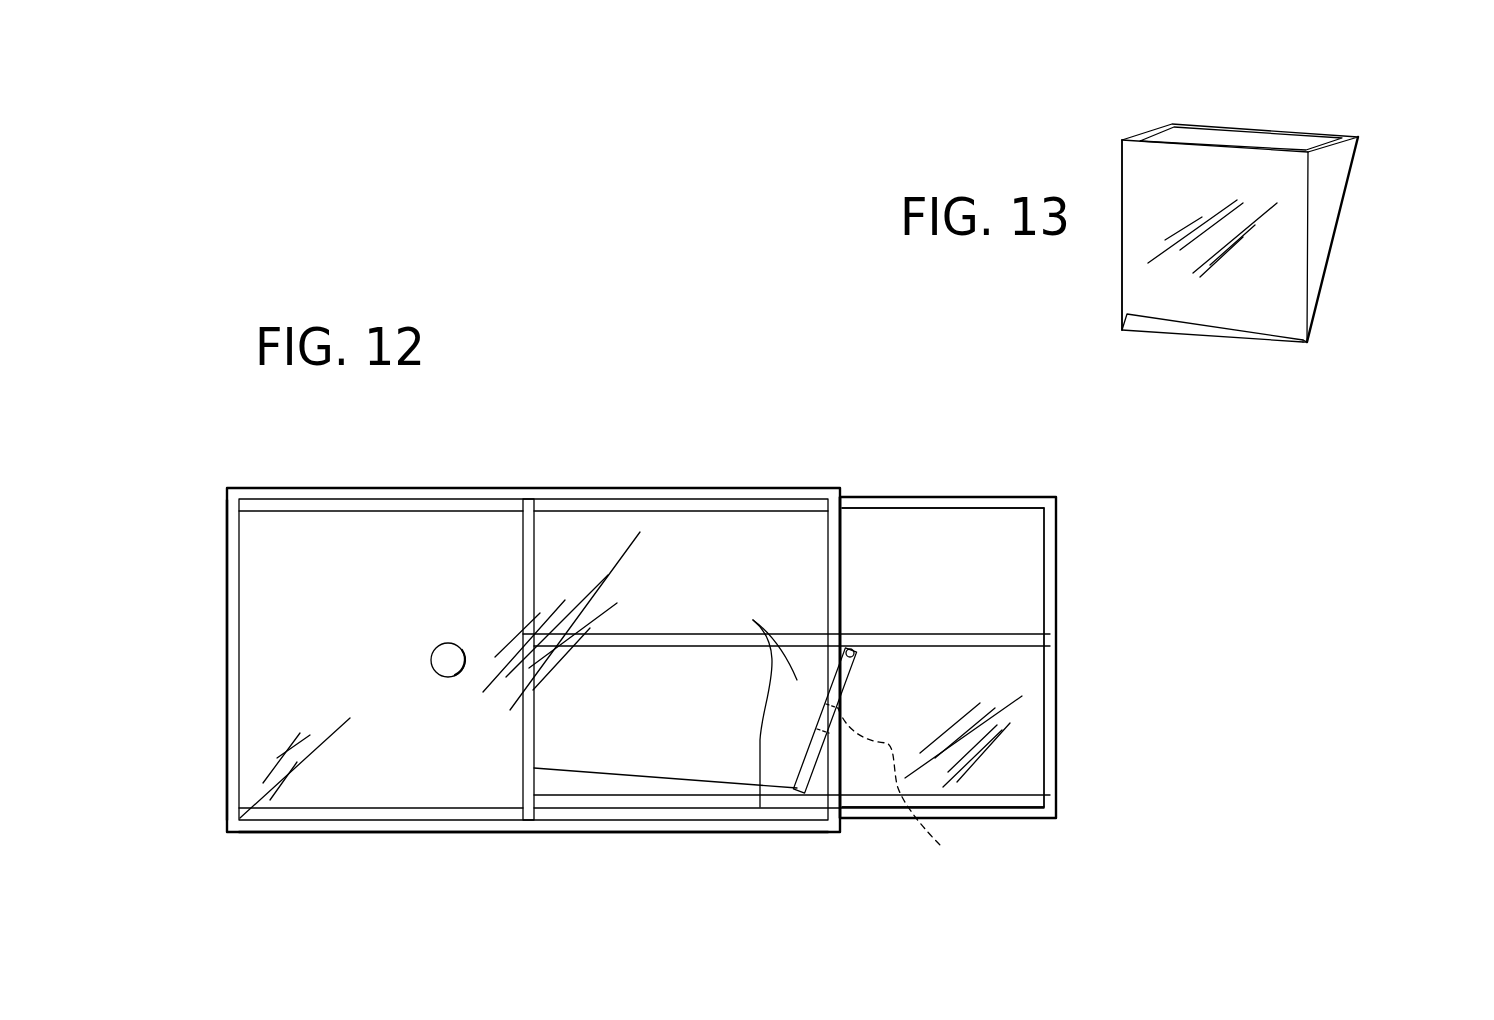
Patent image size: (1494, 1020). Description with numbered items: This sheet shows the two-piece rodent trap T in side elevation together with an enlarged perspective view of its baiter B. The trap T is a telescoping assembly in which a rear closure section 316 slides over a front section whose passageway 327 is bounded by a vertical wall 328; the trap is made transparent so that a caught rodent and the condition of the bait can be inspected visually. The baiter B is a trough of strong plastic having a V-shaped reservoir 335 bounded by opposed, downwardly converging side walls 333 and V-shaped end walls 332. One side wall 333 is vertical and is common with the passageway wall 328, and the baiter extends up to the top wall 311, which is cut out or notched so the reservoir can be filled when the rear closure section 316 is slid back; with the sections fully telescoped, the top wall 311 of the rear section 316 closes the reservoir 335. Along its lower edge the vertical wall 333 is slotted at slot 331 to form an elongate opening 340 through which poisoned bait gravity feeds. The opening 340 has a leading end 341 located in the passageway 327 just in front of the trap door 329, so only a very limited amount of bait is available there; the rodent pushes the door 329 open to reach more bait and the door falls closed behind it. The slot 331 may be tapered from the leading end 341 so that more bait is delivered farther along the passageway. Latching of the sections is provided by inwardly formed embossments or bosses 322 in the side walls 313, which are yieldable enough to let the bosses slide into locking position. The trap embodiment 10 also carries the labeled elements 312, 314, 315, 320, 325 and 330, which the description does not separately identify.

In FIG. 12, the bottom tray assembly 10 is at (1027, 495).
In FIG. 12, the top wall 311 is at (690, 498).
In FIG. 12, the bottom panel 312 is at (463, 822).
In FIG. 12, the side wall 313 is at (870, 530).
In FIG. 12, the end wall 314 is at (1058, 560).
In FIG. 12, the left compartment 315 is at (362, 790).
In FIG. 12, the rear closure section 316 is at (333, 488).
In FIG. 12, the side wall 320 is at (227, 712).
In FIG. 12, the embossment 322 is at (447, 648).
In FIG. 12, the bottom wall 325 is at (1050, 762).
In FIG. 12, the passageway 327 is at (1003, 685).
In FIG. 12, the vertical wall 328 is at (803, 633).
In FIG. 12, the trap door 329 is at (817, 750).
In FIG. 12, the hinge arm 330 is at (895, 756).
In FIG. 12, the slot 331 is at (567, 772).
In FIG. 13, the slot 331 is at (1170, 318).
In FIG. 12, the end wall 332 is at (835, 587).
In FIG. 13, the end wall 332 is at (1162, 132).
In FIG. 12, the side wall 333 is at (597, 525).
In FIG. 13, the side wall 333 is at (1257, 180).
In FIG. 13, the reservoir 335 is at (1200, 127).
In FIG. 12, the elongate opening 340 is at (670, 787).
In FIG. 13, the elongate opening 340 is at (1218, 337).
In FIG. 12, the leading end 341 is at (823, 793).
In FIG. 13, the leading end 341 is at (1297, 342).
In FIG. 12, the trap T is at (390, 460).
In FIG. 12, the baiter B is at (843, 558).
In FIG. 13, the baiter B is at (1382, 177).